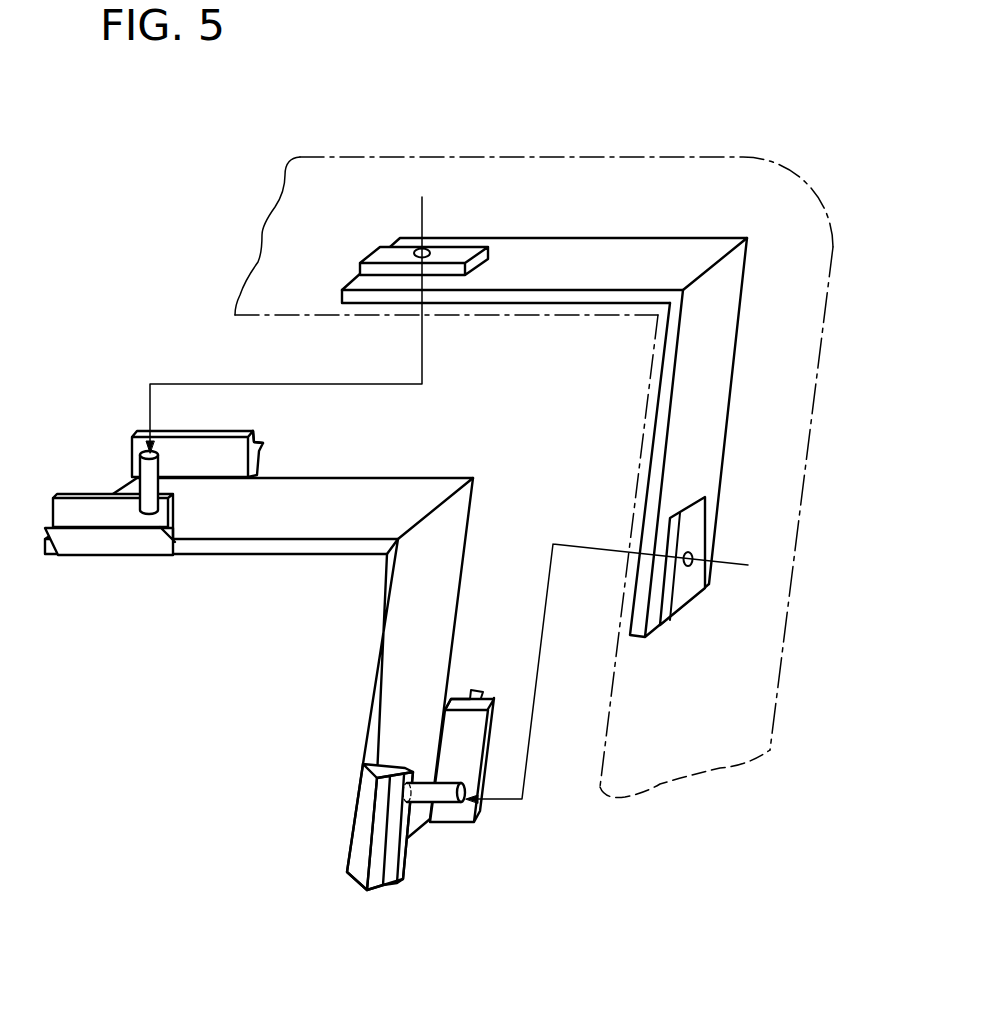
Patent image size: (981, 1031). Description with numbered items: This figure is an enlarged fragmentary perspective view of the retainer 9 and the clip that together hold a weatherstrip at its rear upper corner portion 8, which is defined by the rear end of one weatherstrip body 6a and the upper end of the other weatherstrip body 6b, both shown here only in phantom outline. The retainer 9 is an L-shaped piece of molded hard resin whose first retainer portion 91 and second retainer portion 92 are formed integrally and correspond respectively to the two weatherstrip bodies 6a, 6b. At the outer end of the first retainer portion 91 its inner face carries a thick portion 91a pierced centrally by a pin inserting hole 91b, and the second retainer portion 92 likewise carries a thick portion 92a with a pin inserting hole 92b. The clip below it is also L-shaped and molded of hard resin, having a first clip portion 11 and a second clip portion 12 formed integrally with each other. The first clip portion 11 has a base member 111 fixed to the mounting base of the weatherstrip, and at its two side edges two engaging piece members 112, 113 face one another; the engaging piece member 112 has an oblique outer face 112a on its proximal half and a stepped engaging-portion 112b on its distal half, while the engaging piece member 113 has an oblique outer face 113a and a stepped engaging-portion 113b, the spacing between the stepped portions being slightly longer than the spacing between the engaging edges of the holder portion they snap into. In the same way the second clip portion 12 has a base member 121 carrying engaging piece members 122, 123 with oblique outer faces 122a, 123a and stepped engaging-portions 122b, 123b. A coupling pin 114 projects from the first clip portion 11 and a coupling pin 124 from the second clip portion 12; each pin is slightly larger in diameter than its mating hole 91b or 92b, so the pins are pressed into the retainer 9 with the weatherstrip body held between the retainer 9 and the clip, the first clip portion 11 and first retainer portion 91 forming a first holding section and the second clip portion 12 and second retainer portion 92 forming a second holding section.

The weatherstrip body 6a is at (335, 172).
The weatherstrip body 6b is at (728, 722).
The rear upper corner portion 8 is at (552, 444).
The retainer 9 is at (572, 421).
The first retainer portion 91 is at (537, 267).
The thick portion 91a is at (385, 252).
The pin inserting hole 91b is at (427, 248).
The second retainer portion 92 is at (672, 434).
The thick portion 92a is at (682, 605).
The pin inserting hole 92b is at (700, 555).
The first clip portion 11 is at (394, 598).
The base member 111 is at (126, 484).
The engaging piece member 112 is at (108, 532).
The oblique outer face 112a is at (143, 556).
The stepped engaging-portion 112b is at (80, 517).
The engaging piece member 113 is at (259, 406).
The oblique outer face 113a is at (260, 466).
The stepped engaging-portion 113b is at (262, 440).
The coupling pin 114 is at (163, 483).
The second clip portion 12 is at (505, 738).
The base member 121 is at (423, 828).
The engaging piece member 122 is at (371, 881).
The oblique outer face 122a is at (350, 875).
The stepped engaging-portion 122b is at (380, 884).
The engaging piece member 123 is at (510, 722).
The oblique outer face 123a is at (455, 707).
The stepped engaging-portion 123b is at (485, 700).
The coupling pin 124 is at (428, 782).